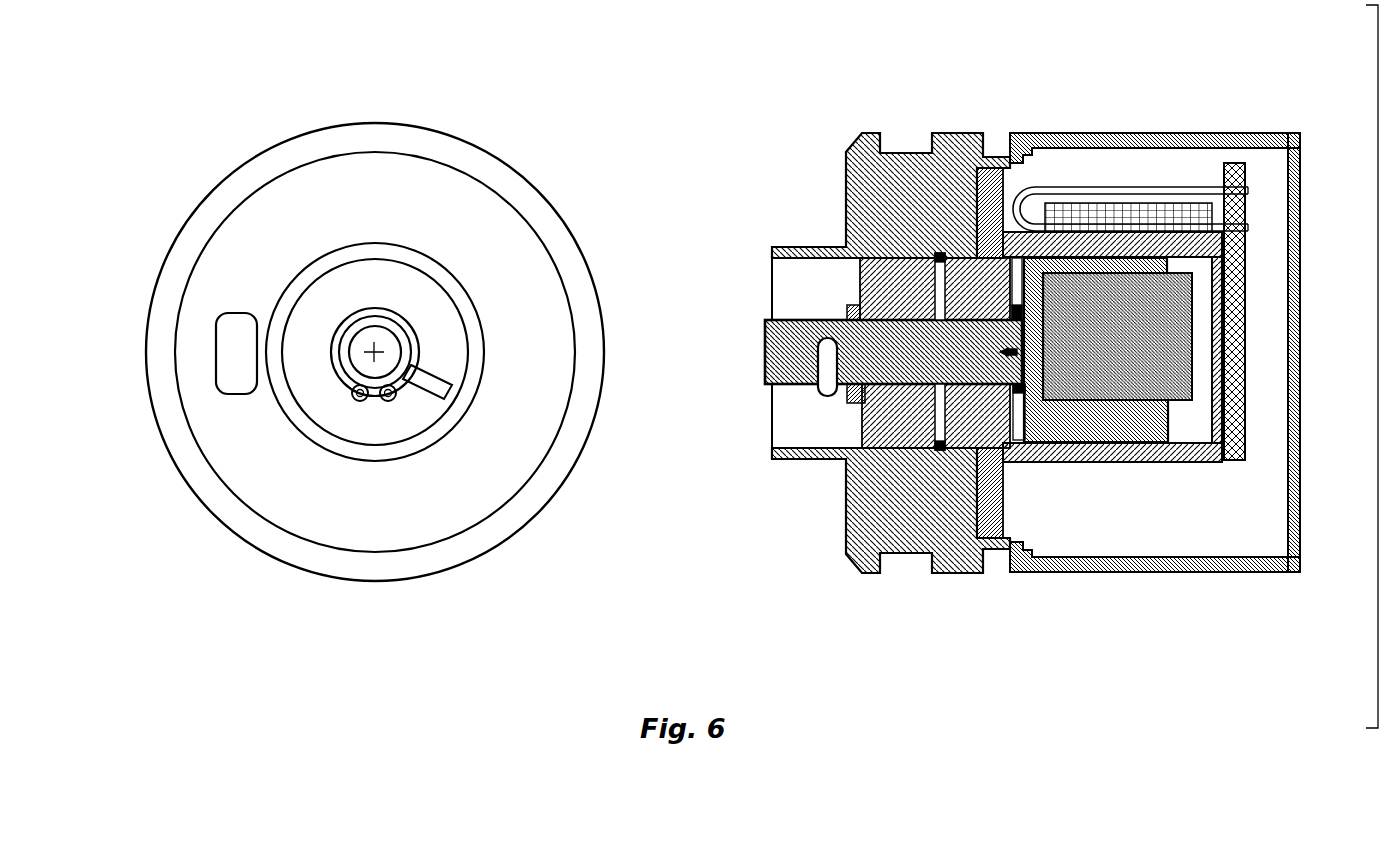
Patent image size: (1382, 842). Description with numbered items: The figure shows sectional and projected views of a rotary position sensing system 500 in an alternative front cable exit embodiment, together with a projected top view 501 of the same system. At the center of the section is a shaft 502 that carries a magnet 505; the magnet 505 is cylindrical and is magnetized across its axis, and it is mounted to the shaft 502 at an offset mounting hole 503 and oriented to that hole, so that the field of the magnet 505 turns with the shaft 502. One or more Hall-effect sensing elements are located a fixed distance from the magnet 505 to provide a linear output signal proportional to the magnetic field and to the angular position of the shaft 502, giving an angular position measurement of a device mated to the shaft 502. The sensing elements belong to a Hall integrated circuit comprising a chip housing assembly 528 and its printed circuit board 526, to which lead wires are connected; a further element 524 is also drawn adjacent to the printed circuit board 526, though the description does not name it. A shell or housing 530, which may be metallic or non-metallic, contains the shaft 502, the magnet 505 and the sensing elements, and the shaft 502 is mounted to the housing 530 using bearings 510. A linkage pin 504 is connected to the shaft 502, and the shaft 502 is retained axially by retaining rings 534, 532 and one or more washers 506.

The rotary position sensing system 500 is at (808, 103).
The projected top view 501 is at (160, 118).
The shaft 502 is at (360, 343).
The offset mounting hole 503 is at (988, 367).
The linkage pin 504 is at (448, 398).
The magnet 505 is at (1150, 349).
The washer 506 is at (847, 403).
The bearing 510 is at (393, 514).
The coil 524 is at (1167, 203).
The printed circuit board 526 is at (1246, 398).
The chip housing assembly 528 is at (1157, 463).
The housing 530 is at (1125, 572).
The retaining ring 532 is at (923, 555).
The retaining ring 534 is at (426, 256).